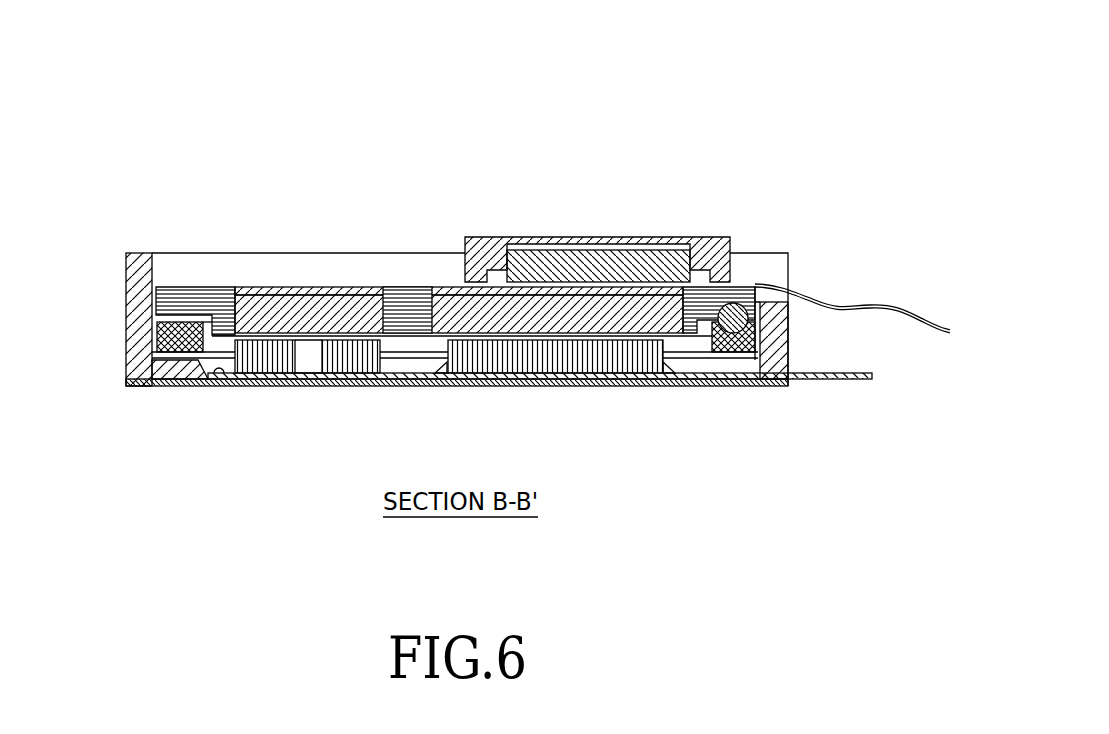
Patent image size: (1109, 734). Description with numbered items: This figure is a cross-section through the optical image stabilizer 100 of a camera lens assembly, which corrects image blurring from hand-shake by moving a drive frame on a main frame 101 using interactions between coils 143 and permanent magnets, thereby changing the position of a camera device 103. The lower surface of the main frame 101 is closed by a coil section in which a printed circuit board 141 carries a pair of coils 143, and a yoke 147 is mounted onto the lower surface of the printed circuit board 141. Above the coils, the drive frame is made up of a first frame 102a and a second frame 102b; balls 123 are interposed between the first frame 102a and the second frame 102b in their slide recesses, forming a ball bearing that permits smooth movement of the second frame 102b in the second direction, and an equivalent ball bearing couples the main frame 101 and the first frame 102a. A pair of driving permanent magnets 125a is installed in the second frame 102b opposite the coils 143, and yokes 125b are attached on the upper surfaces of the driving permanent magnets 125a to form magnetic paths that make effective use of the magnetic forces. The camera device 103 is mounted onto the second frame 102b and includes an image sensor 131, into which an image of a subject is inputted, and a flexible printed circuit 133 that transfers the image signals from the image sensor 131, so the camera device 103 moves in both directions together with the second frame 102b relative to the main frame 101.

The optical image stabilizer 100 is at (415, 105).
The main frame 101 is at (138, 250).
The first frame 102a is at (157, 330).
The second frame 102b is at (198, 293).
The camera device 103 is at (748, 227).
The balls 123 is at (748, 312).
The driving permanent magnets 125a is at (344, 313).
The yokes 125b is at (272, 287).
The image sensor 131 is at (665, 263).
The flexible printed circuit 133 is at (860, 302).
The printed circuit board 141 is at (219, 387).
The coils 143 is at (283, 386).
The yoke 147 is at (417, 386).